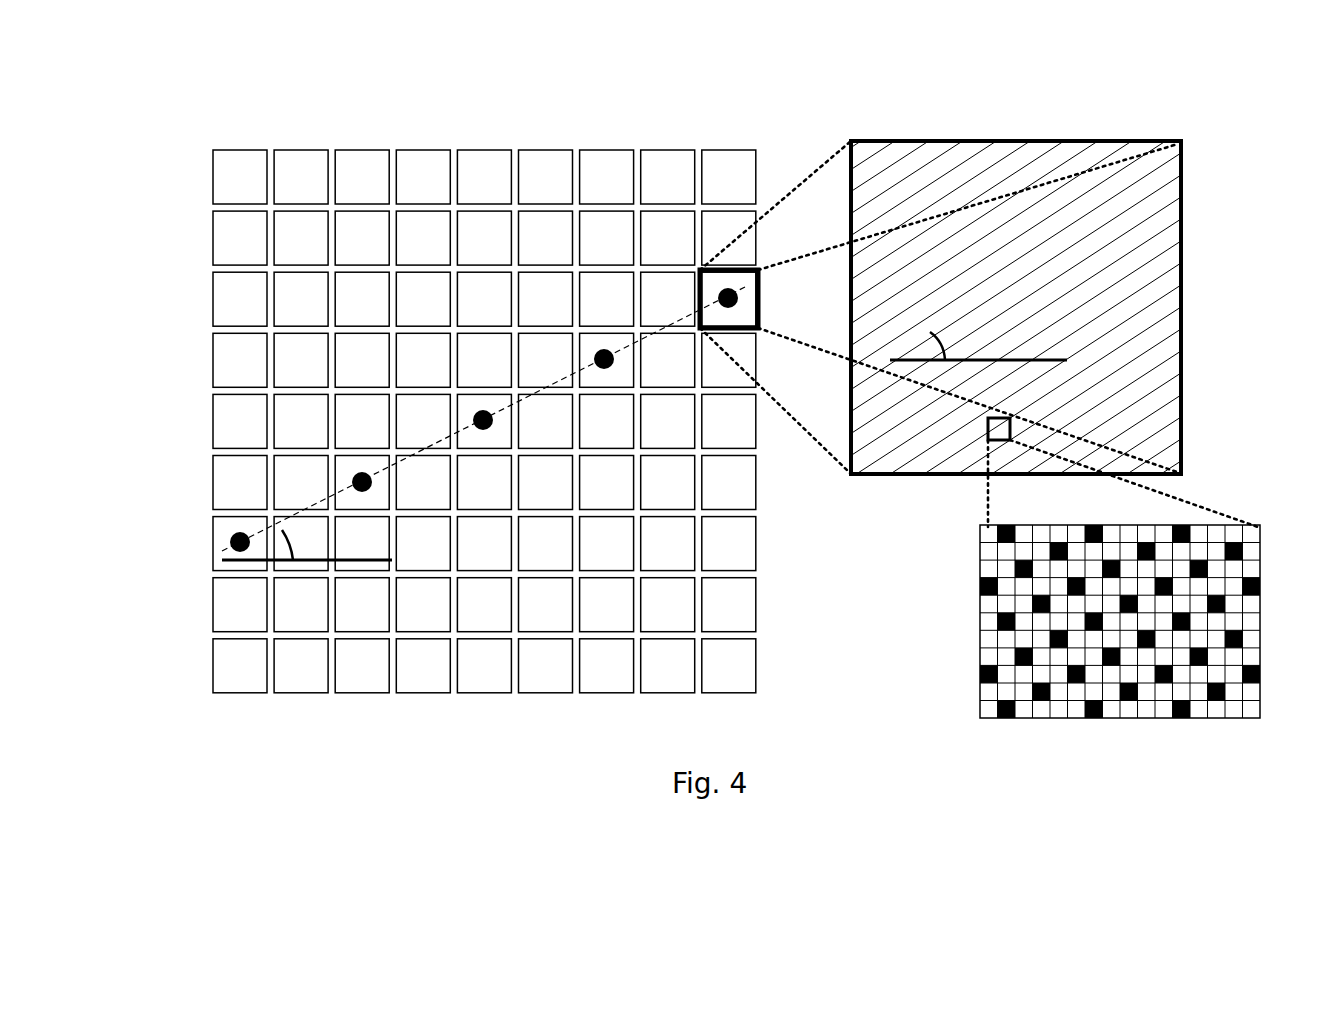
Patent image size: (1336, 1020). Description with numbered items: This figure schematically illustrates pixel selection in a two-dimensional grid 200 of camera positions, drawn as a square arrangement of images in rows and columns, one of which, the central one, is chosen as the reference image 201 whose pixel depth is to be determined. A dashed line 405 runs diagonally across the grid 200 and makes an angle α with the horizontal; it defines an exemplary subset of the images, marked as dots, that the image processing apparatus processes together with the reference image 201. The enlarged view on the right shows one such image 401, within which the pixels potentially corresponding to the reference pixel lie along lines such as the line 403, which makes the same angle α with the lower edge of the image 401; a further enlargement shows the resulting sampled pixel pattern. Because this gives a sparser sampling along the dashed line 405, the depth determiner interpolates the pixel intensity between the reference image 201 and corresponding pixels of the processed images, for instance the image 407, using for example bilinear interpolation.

The two-dimensional grid 200 is at (197, 132).
The reference image 201 is at (457, 418).
The image 401 is at (1181, 228).
The line 403 is at (1043, 270).
The dashed line 405 is at (558, 380).
The image 407 is at (602, 332).